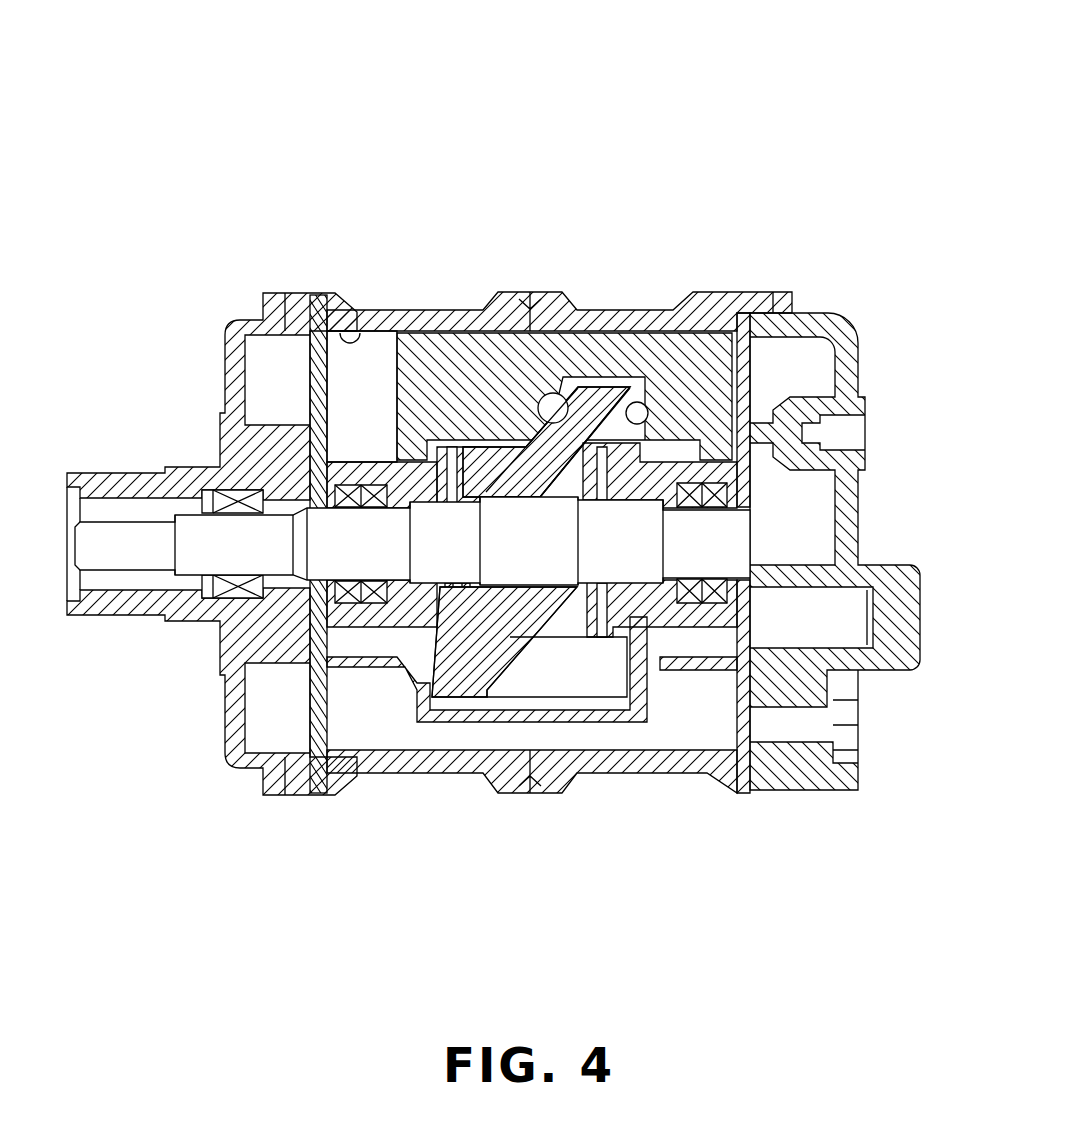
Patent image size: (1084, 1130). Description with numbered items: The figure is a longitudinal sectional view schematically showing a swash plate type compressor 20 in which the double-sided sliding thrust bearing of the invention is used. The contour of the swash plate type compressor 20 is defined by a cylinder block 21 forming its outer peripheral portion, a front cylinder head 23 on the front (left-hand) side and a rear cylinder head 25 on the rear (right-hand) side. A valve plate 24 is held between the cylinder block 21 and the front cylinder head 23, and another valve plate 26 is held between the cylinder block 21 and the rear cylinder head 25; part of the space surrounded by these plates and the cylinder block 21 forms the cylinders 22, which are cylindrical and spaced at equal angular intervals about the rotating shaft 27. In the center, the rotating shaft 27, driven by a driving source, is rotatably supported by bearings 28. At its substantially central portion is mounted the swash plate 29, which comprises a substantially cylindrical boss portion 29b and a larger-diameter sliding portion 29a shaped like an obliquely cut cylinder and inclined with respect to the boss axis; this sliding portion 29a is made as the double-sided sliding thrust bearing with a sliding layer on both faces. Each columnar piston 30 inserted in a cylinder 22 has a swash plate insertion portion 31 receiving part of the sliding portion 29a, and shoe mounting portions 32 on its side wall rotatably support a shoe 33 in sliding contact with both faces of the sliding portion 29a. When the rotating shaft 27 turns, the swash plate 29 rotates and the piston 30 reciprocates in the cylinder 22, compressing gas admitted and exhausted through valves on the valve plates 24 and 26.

The swash plate type compressor 20 is at (514, 489).
The cylinder block 21 is at (476, 785).
The cylinder 22 is at (363, 332).
The front cylinder head 23 is at (237, 330).
The valve plate 24 is at (322, 300).
The rear cylinder head 25 is at (840, 336).
The valve plate 26 is at (780, 312).
The rotating shaft 27 is at (133, 552).
The bearings 28 is at (378, 604).
The swash plate 29 is at (544, 759).
The sliding portion 29a is at (455, 692).
The boss portion 29b is at (545, 640).
The piston 30 is at (435, 345).
The swash plate insertion portion 31 is at (617, 387).
The shoe mounting portions 32 is at (575, 420).
The shoe 33 is at (556, 393).